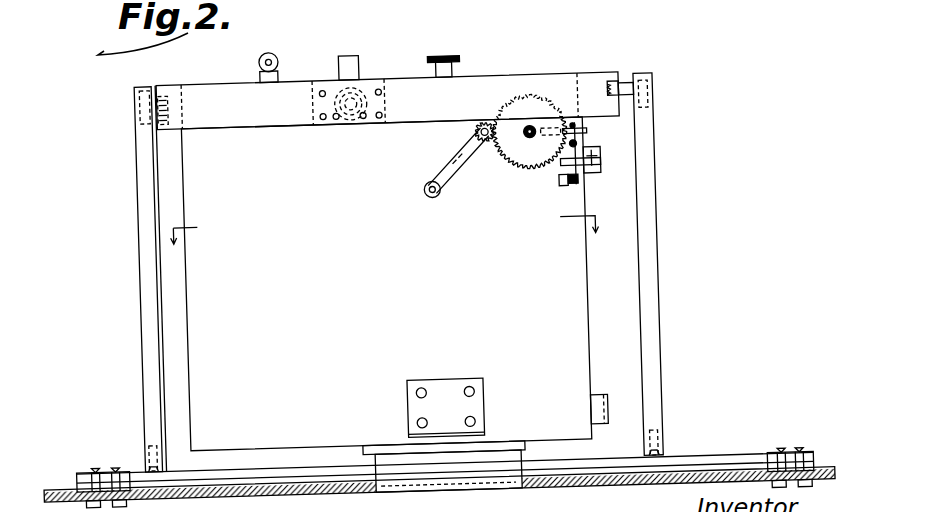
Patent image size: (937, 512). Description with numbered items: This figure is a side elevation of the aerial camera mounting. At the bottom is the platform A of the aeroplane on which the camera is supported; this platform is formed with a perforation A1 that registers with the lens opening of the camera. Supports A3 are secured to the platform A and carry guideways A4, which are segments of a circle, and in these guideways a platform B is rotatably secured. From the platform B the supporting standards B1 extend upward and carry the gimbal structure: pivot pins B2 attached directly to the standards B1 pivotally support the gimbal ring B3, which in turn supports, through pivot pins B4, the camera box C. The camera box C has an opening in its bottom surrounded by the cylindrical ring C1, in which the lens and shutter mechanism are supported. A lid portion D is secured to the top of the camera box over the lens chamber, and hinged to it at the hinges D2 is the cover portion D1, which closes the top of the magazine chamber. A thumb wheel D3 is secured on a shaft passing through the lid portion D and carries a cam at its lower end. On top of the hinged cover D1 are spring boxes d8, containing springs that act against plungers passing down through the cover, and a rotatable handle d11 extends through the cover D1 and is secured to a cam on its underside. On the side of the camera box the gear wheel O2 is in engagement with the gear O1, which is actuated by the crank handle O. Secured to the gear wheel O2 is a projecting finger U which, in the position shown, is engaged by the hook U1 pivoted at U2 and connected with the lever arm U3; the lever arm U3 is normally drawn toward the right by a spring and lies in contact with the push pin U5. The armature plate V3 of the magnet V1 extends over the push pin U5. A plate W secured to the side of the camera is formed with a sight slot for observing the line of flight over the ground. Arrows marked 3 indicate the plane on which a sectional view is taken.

The lid portion D is at (529, 82).
The cover portion D1 is at (236, 76).
The hinges D2 is at (388, 78).
The thumb wheel D3 is at (464, 62).
The spring boxes d8 is at (366, 53).
The rotatable handle d11 is at (279, 50).
The platform B is at (194, 465).
The supporting standards B1 is at (153, 255).
The pivot pins B2 is at (172, 82).
The gimbal ring B3 is at (597, 80).
The pivot pins B4 is at (346, 81).
The camera box C is at (394, 284).
The cylindrical ring C1 is at (412, 477).
The platform of the aeroplane A is at (662, 488).
The perforation A1 is at (522, 488).
The supports A3 is at (94, 468).
The guideways A4 is at (120, 472).
The crank handle O is at (449, 178).
The gear O1 is at (480, 131).
The gear wheel O2 is at (535, 172).
The projecting finger U is at (590, 153).
The hook U1 is at (585, 131).
The pivot U2 is at (584, 147).
The lever arm U3 is at (542, 215).
The push pin U5 is at (584, 162).
The magnet V1 is at (598, 186).
The armature plate V3 is at (603, 180).
The plate W is at (466, 431).
The section line 3 is at (383, 243).